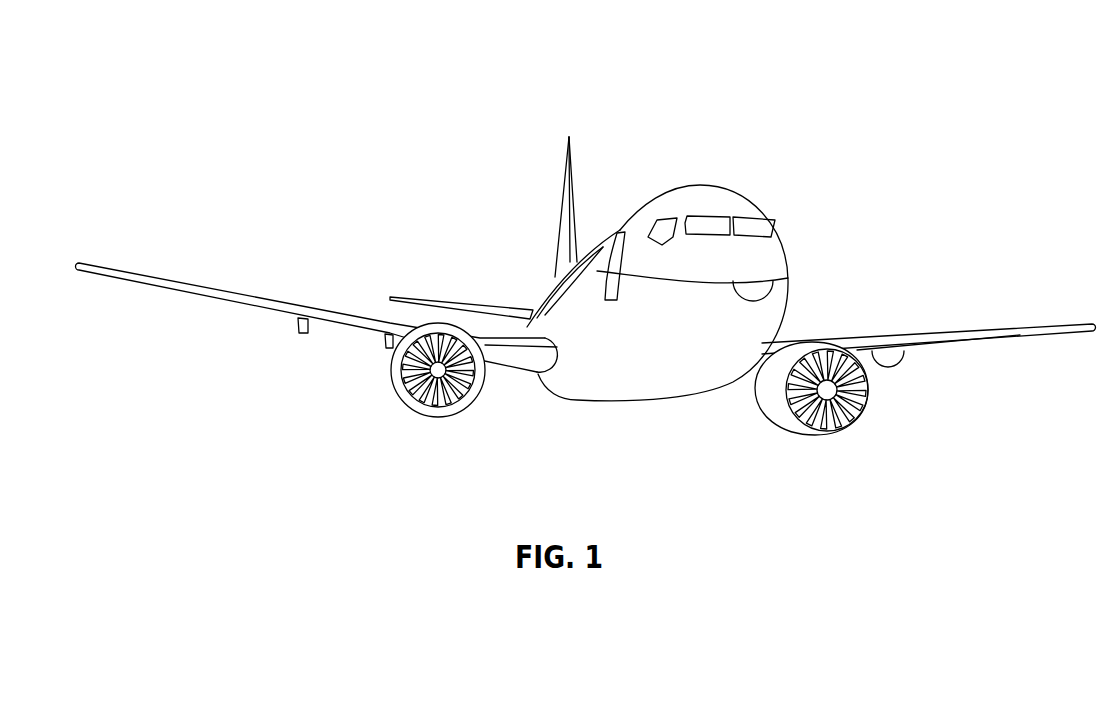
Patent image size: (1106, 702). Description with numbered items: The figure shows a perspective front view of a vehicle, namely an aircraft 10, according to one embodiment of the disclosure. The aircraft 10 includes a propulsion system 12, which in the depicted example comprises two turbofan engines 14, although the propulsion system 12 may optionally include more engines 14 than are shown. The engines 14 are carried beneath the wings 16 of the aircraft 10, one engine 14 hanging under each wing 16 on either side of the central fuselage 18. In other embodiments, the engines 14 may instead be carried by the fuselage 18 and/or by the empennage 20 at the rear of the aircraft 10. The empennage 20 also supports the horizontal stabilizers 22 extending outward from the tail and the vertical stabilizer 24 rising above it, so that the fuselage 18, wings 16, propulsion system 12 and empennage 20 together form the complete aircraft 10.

The aircraft 10 is at (331, 80).
The propulsion system 12 is at (914, 428).
The turbofan engines 14 is at (432, 413).
The wings 16 is at (213, 290).
The fuselage 18 is at (785, 250).
The empennage 20 is at (557, 280).
The horizontal stabilizers 22 is at (428, 298).
The vertical stabilizer 24 is at (565, 177).